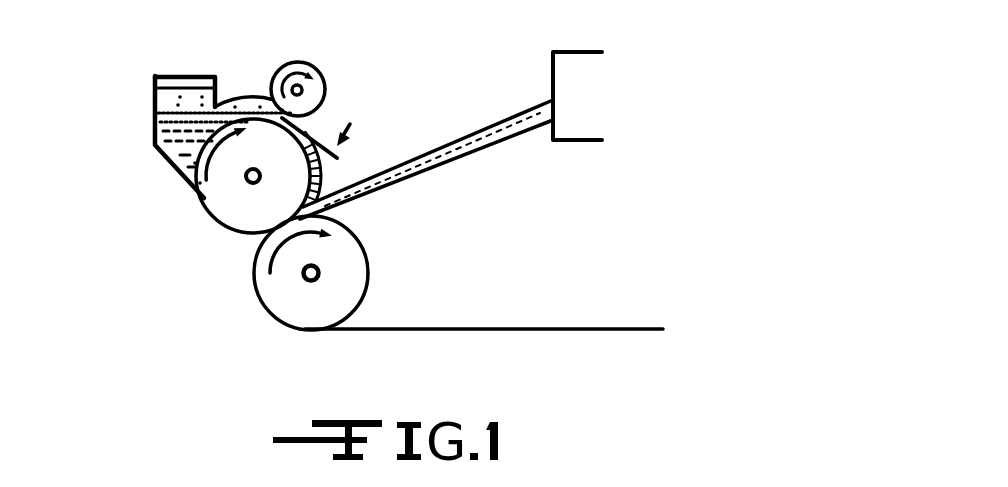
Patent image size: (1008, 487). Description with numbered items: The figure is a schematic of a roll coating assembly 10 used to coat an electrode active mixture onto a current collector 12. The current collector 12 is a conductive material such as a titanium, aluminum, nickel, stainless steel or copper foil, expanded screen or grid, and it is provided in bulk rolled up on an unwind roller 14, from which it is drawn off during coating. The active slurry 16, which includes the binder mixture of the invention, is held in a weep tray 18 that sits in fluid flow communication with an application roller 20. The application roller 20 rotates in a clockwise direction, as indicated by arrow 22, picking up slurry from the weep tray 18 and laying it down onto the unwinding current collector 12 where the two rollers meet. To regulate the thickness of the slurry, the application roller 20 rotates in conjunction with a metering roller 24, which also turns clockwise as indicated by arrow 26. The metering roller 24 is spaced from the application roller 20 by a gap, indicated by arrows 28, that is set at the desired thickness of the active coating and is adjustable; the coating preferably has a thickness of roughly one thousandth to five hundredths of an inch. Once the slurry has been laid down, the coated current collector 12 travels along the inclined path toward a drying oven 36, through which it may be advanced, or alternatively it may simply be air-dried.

The coating apparatus 10 is at (450, 82).
The current collector 12 is at (458, 328).
The unwind roller 14 is at (345, 262).
The active slurry 16 is at (185, 102).
The weep tray 18 is at (154, 107).
The application roller 20 is at (230, 203).
The arrow 22 is at (215, 161).
The metering roller 24 is at (318, 104).
The arrow 26 is at (282, 72).
The arrows 28 is at (337, 158).
The drying oven 36 is at (575, 137).